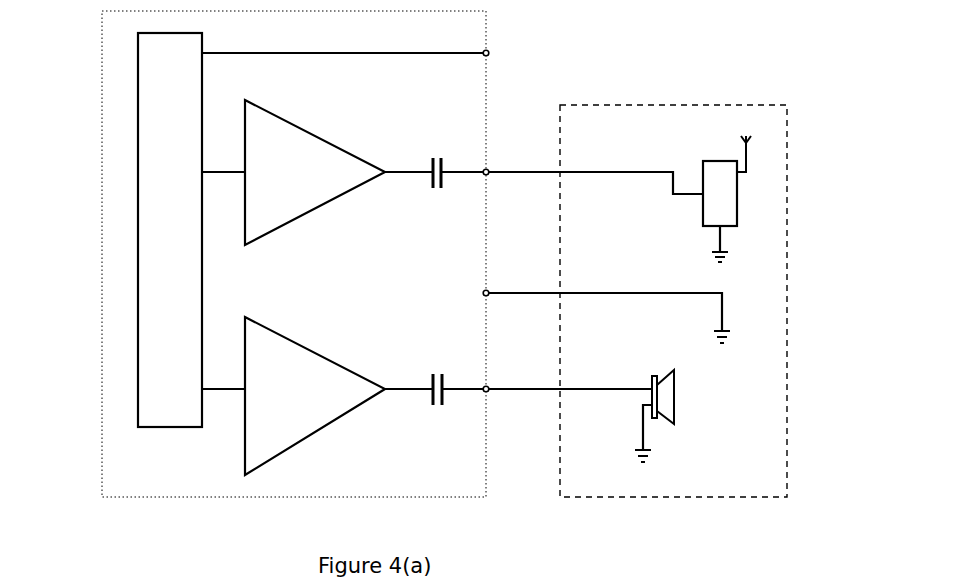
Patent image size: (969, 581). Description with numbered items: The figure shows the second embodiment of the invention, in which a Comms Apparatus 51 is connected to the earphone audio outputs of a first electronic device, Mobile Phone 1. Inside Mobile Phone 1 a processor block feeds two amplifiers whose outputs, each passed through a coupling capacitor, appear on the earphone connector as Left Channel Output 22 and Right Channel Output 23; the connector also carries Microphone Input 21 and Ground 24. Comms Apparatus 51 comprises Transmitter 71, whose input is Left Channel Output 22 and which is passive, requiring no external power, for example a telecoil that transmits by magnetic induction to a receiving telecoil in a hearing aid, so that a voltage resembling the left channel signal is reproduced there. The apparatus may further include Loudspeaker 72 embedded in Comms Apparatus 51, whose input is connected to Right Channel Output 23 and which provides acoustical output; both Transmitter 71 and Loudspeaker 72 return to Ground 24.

The mobile phone 1 is at (70, 392).
The microphone input 21 is at (488, 50).
The left channel output 22 is at (488, 175).
The right channel output 23 is at (488, 386).
The ground 24 is at (488, 296).
The comms apparatus 51 is at (766, 62).
The transmitter 71 is at (728, 200).
The loudspeaker 72 is at (668, 400).